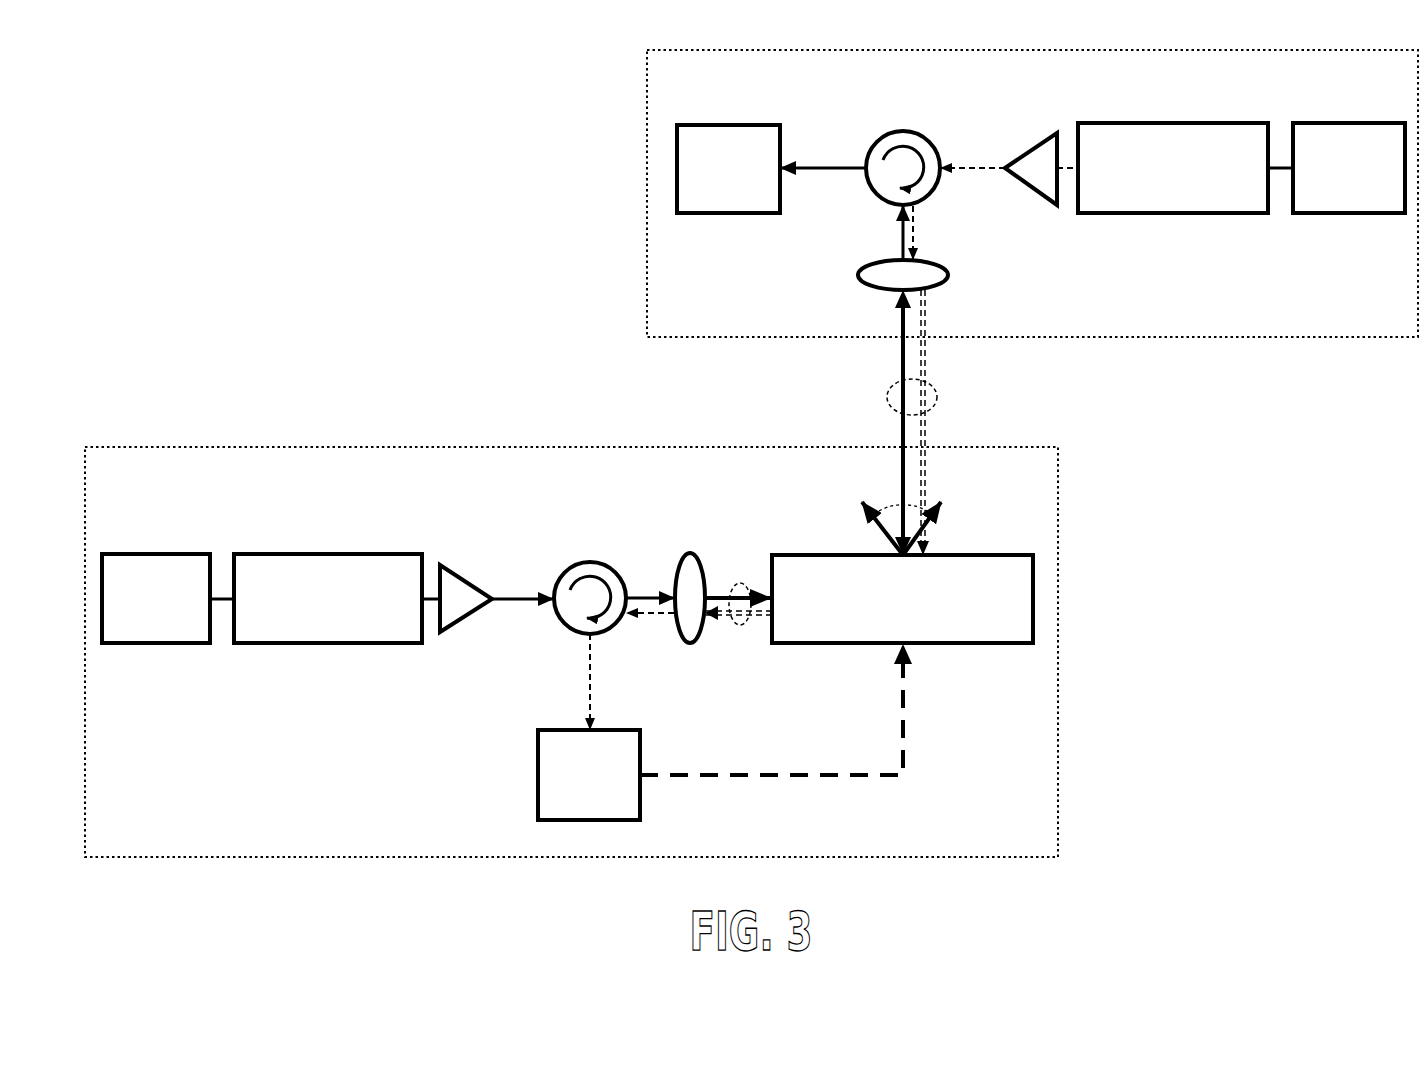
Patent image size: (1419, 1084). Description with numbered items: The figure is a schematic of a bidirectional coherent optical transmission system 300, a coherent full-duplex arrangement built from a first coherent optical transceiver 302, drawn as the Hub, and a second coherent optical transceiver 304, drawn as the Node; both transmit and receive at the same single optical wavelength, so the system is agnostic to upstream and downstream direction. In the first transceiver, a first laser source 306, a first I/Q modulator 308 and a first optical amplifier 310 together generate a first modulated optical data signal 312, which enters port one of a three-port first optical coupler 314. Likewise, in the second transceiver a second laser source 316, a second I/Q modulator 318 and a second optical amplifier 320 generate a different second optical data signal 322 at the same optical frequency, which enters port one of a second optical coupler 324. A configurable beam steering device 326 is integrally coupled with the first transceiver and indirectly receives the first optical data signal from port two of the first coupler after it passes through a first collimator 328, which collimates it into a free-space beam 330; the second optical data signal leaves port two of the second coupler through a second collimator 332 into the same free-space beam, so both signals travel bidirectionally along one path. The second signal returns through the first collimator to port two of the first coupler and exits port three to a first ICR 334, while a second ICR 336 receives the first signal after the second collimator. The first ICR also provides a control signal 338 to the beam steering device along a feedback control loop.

The bidirectional coherent optical transmission system 300 is at (328, 181).
The first coherent optical transceiver 302 is at (256, 822).
The second coherent optical transceiver 304 is at (1241, 320).
The first laser source 306 is at (137, 631).
The first I/Q modulator 308 is at (308, 631).
The first optical amplifier 310 is at (467, 577).
The first modulated optical data signal 312 is at (653, 593).
The first optical coupler 314 is at (563, 627).
The second laser source 316 is at (1329, 199).
The second I/Q modulator 318 is at (1153, 199).
The second optical amplifier 320 is at (1035, 150).
The second optical data signal 322 is at (663, 612).
The second optical coupler 324 is at (905, 131).
The beam steering device 326 is at (883, 631).
The first collimator 328 is at (689, 553).
The free-space beam 330 is at (738, 585).
The second collimator 332 is at (858, 275).
The first ICR 334 is at (569, 807).
The second ICR 336 is at (708, 197).
The control signal 338 is at (903, 743).